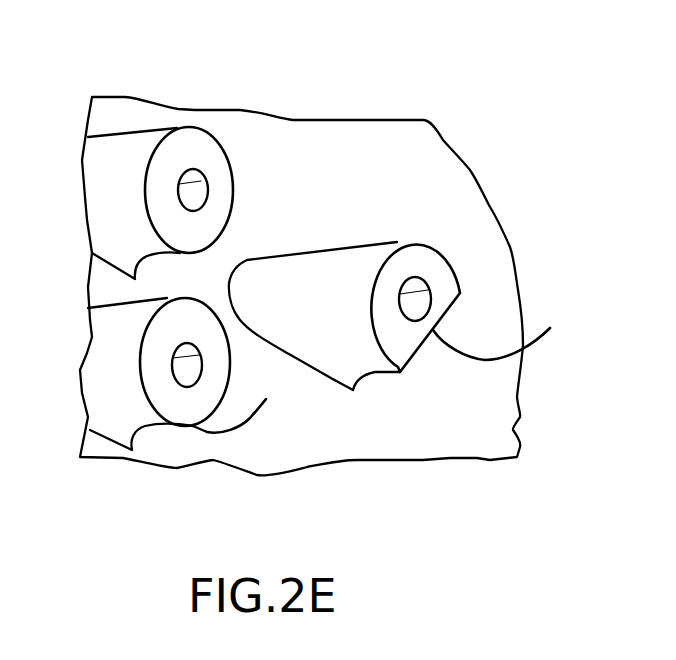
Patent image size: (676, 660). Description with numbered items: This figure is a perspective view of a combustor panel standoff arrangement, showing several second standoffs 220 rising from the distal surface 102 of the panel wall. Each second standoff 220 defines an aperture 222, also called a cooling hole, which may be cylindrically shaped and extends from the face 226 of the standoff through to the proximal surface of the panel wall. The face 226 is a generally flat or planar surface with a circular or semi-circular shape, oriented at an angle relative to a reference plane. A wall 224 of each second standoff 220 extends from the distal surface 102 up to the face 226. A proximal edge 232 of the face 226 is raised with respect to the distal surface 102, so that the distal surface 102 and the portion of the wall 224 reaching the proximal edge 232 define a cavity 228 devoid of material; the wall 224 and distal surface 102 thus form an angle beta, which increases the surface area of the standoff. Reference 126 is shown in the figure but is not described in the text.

The distal surface 102 is at (367, 178).
The fragment of housing 126 is at (439, 495).
The second standoff 220 is at (192, 104).
The aperture 222 is at (212, 189).
The wall 224 is at (130, 153).
The face 226 is at (170, 337).
The cavity 228 is at (196, 451).
The proximal edge 232 is at (398, 372).